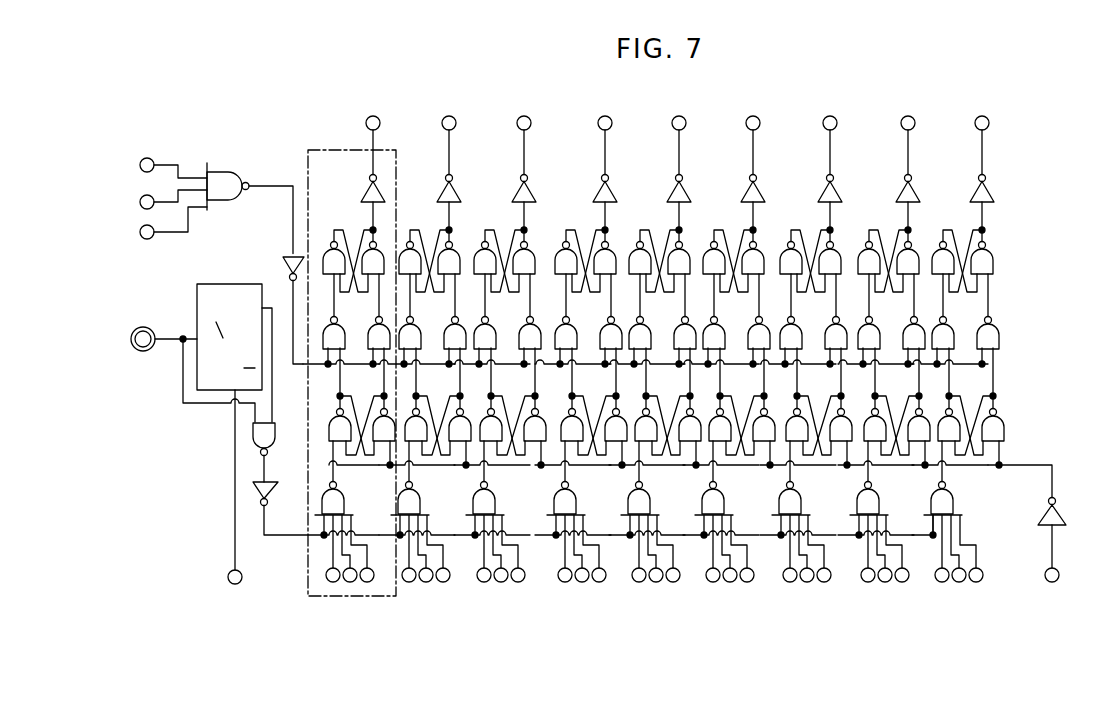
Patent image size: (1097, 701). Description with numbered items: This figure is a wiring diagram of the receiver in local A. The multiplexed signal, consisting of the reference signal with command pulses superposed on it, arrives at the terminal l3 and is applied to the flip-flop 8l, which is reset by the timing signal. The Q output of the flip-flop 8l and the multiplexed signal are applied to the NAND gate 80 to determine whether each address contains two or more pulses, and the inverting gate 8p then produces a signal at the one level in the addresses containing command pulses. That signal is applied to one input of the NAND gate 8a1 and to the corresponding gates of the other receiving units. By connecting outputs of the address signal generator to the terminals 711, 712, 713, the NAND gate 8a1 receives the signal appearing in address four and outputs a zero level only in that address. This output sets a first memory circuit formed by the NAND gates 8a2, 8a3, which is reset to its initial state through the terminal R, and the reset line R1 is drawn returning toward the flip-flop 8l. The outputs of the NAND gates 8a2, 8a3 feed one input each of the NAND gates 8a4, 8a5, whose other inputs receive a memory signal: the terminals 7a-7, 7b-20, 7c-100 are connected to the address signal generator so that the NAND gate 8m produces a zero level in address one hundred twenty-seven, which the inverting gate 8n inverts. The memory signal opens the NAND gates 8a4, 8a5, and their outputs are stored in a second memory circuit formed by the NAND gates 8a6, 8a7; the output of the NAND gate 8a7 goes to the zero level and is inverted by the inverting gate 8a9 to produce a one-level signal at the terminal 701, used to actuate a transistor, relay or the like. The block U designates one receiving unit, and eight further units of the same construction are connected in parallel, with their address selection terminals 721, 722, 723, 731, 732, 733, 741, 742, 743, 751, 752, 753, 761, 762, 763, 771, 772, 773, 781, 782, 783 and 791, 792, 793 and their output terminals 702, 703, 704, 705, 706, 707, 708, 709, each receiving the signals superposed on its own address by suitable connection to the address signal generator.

The output terminal 701 is at (379, 106).
The output terminal 702 is at (455, 106).
The output terminal 703 is at (530, 106).
The output terminal 704 is at (611, 106).
The output terminal 705 is at (685, 106).
The output terminal 706 is at (759, 106).
The output terminal 707 is at (836, 106).
The output terminal 708 is at (914, 106).
The output terminal 709 is at (988, 106).
The address input terminal 711 is at (344, 595).
The address input terminal 712 is at (347, 609).
The address input terminal 713 is at (379, 595).
The address input terminal 721 is at (419, 592).
The address input terminal 722 is at (436, 605).
The address input terminal 723 is at (458, 618).
The address input terminal 731 is at (494, 592).
The address input terminal 732 is at (511, 605).
The address input terminal 733 is at (533, 618).
The address input terminal 741 is at (575, 592).
The address input terminal 742 is at (592, 605).
The address input terminal 743 is at (614, 618).
The address input terminal 751 is at (649, 592).
The address input terminal 752 is at (666, 605).
The address input terminal 753 is at (688, 618).
The address input terminal 761 is at (723, 592).
The address input terminal 762 is at (740, 605).
The address input terminal 763 is at (762, 618).
The address input terminal 771 is at (800, 592).
The address input terminal 772 is at (817, 605).
The address input terminal 773 is at (839, 618).
The address input terminal 781 is at (878, 592).
The address input terminal 782 is at (895, 605).
The address input terminal 783 is at (917, 618).
The address input terminal 791 is at (946, 594).
The address input terminal 792 is at (962, 606).
The address input terminal 793 is at (974, 618).
The memory signal input terminal 7a-7 is at (147, 158).
The memory signal input terminal 7b-20 is at (146, 195).
The memory signal input terminal 7c-100 is at (136, 232).
The NAND gate 8m is at (238, 172).
The inverting gate 8n is at (283, 266).
The flip-flop 8l is at (212, 284).
The terminal l3 is at (134, 330).
The NAND gate 80 is at (252, 430).
The inverting gate 8p is at (253, 492).
The reset terminal R1 is at (235, 584).
The reset terminal R is at (1052, 582).
The receiving unit U is at (350, 148).
The NAND gate 8a1 is at (346, 525).
The NAND gate 8a2 is at (328, 437).
The NAND gate 8a3 is at (364, 437).
The NAND gate 8a4 is at (308, 358).
The NAND gate 8a5 is at (360, 343).
The NAND gate 8a6 is at (339, 260).
The NAND gate 8a7 is at (386, 261).
The inverting gate 8a9 is at (397, 186).